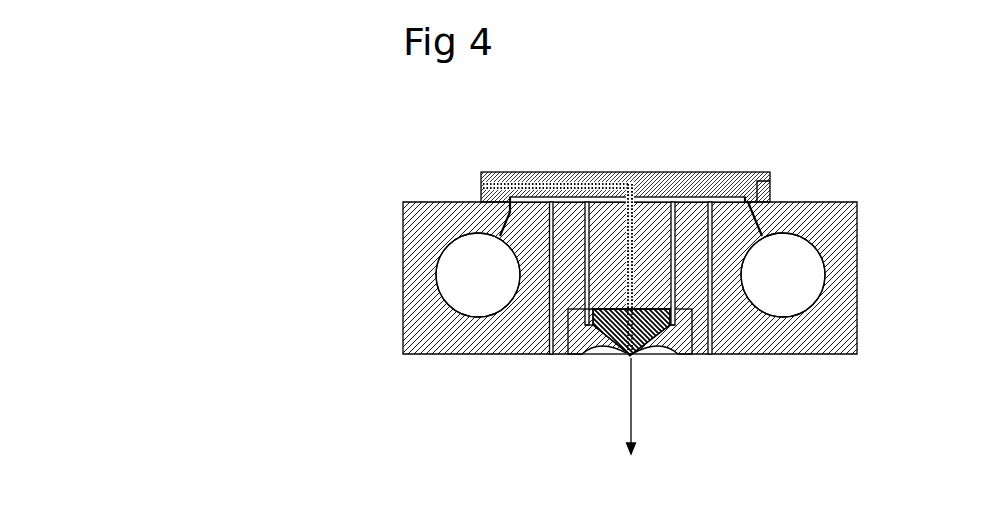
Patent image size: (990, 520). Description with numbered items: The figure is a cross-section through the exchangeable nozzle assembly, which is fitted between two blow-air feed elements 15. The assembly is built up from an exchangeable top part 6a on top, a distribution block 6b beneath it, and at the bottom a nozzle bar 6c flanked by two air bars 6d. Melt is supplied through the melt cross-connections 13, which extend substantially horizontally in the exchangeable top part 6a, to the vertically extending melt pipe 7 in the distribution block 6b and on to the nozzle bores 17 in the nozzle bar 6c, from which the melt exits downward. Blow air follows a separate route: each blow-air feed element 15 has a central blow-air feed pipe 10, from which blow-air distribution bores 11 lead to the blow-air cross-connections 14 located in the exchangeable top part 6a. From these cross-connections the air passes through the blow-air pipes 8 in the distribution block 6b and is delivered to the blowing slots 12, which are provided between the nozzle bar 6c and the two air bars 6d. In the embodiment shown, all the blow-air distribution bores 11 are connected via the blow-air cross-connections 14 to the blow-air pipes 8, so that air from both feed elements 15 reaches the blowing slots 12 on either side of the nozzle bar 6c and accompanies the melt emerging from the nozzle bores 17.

The exchangeable top part 6a is at (660, 183).
The distribution block 6b is at (700, 322).
The nozzle bar 6c is at (668, 342).
The air bar 6d is at (572, 342).
The melt pipe 7 is at (770, 200).
The blow-air pipe 8 is at (585, 277).
The central blow-air feed pipe 10 is at (793, 265).
The blow-air distribution bore 11 is at (508, 211).
The blowing slot 12 is at (640, 342).
The melt cross-connection 13 is at (549, 183).
The blow-air cross-connection 14 is at (695, 199).
The blow-air feed element 15 is at (466, 340).
The nozzle bore 17 is at (623, 355).